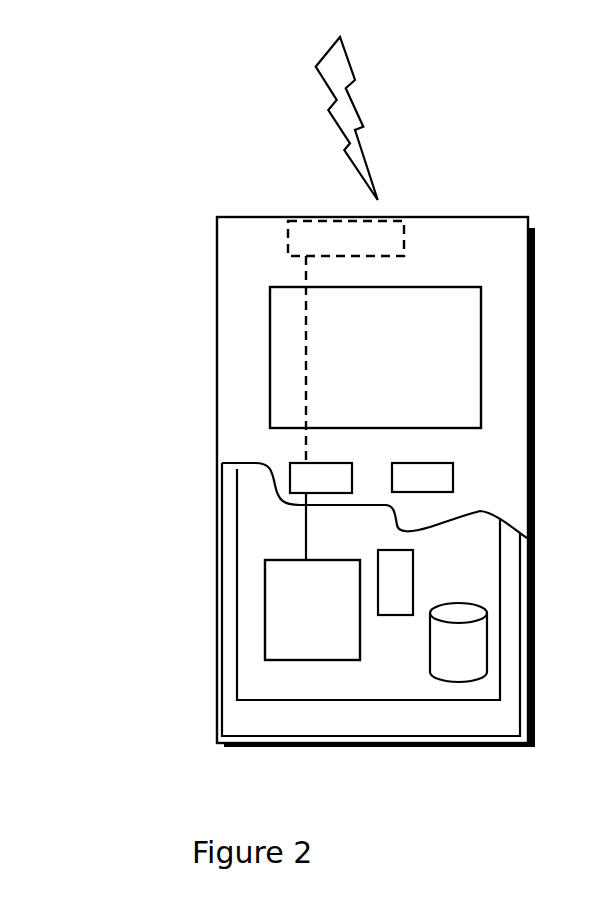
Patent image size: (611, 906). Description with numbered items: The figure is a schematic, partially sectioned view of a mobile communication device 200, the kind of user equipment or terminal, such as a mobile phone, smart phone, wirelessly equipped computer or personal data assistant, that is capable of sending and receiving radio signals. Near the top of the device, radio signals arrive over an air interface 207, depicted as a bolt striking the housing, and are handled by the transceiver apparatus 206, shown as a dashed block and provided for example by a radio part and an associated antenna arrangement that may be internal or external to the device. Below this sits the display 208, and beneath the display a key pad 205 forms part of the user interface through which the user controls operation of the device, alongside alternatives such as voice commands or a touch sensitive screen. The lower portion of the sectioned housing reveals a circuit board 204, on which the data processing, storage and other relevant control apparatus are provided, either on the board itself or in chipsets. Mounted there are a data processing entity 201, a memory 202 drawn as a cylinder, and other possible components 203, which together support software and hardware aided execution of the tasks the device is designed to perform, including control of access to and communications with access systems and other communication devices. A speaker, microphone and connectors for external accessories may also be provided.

The mobile device 200 is at (218, 261).
The data processing entity 201 is at (270, 595).
The memory 202 is at (453, 653).
The other possible components 203 is at (395, 568).
The circuit board 204 is at (263, 682).
The key pad 205 is at (297, 478).
The transceiver apparatus 206 is at (393, 231).
The air interface 207 is at (379, 146).
The display 208 is at (288, 344).